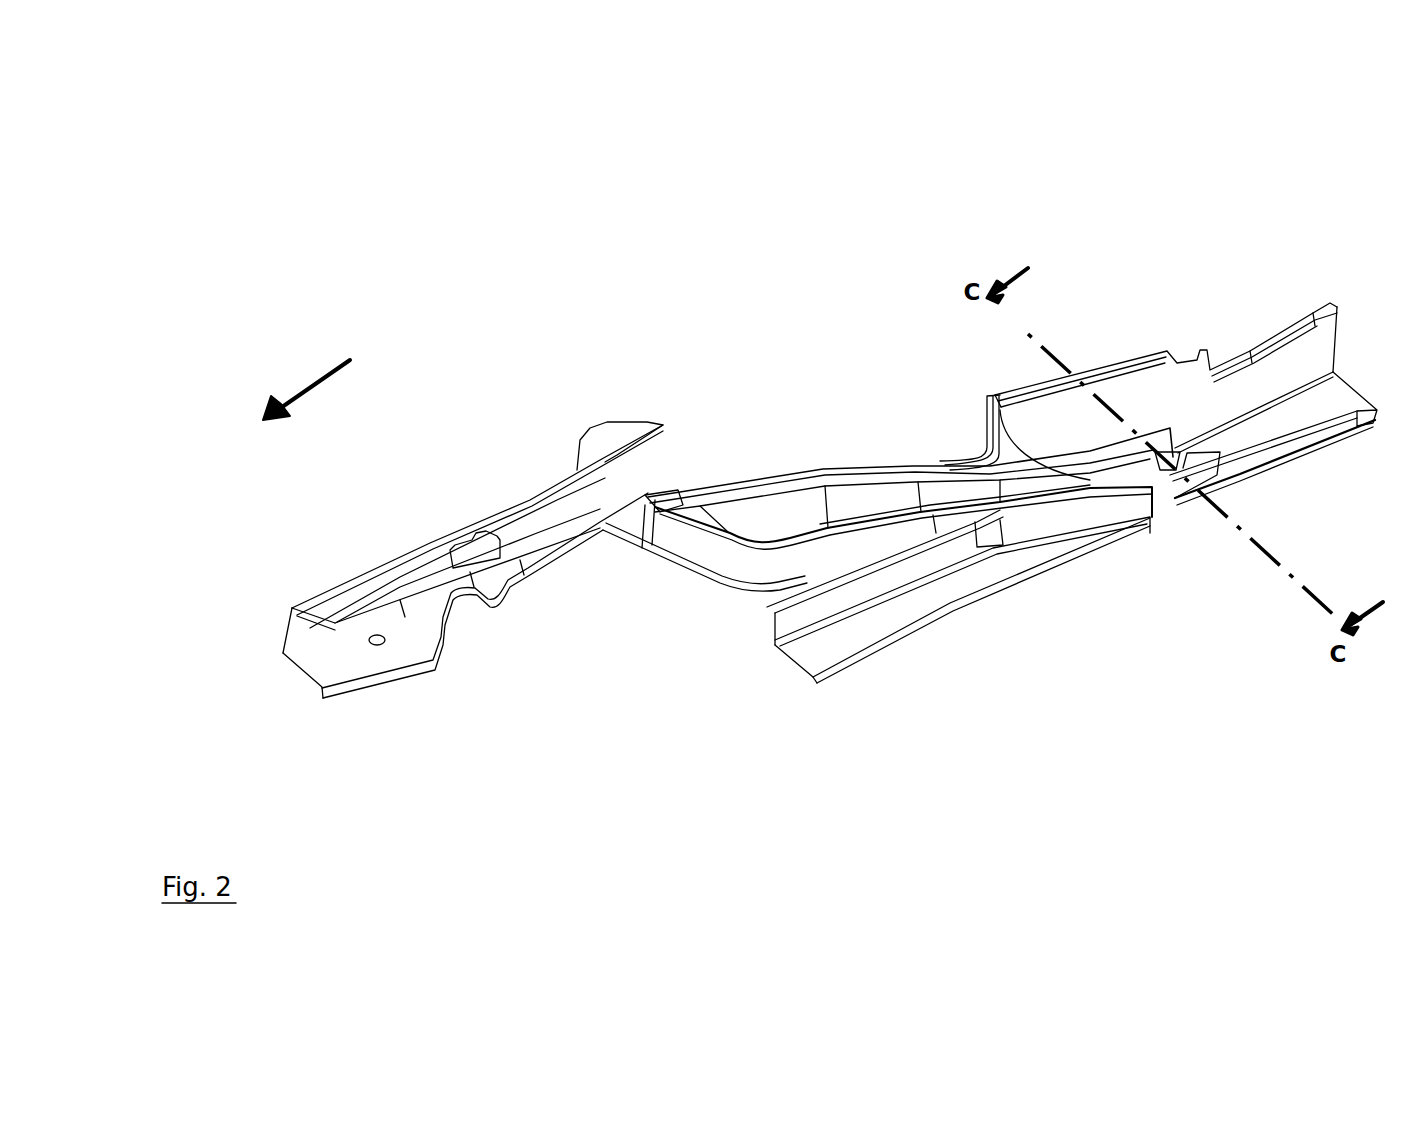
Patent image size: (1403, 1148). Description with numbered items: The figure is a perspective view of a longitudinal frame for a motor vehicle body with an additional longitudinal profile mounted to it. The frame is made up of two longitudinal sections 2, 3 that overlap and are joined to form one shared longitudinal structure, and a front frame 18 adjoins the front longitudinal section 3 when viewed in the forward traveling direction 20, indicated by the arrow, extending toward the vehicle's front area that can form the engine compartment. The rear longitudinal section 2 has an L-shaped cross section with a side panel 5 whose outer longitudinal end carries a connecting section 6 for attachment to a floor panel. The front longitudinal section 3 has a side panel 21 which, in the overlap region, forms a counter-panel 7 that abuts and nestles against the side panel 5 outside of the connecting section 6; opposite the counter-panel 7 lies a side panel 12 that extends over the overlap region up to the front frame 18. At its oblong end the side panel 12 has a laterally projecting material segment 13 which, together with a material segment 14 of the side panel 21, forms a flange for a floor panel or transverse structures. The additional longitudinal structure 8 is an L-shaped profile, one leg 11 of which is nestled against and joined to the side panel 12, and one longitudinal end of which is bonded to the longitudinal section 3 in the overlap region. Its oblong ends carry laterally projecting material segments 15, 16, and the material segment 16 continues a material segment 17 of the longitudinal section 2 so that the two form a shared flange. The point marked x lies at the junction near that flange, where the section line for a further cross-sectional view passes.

The longitudinal section 2 is at (1143, 393).
The longitudinal section 3 is at (872, 493).
The side panel 5 is at (1280, 360).
The connecting section 6 is at (1040, 388).
The counter-panel 7 is at (993, 400).
The longitudinal structure 8 is at (805, 648).
The leg 11 is at (797, 618).
The side panel 12 is at (753, 563).
The material segment 13 is at (843, 523).
The material segment 14 is at (803, 480).
The material segment 15 is at (830, 575).
The material segment 16 is at (885, 648).
The material segment 17 is at (1263, 472).
The front frame 18 is at (403, 630).
The forward traveling direction 20 is at (303, 393).
The side panel 21 is at (905, 497).
The reference point x is at (1172, 457).